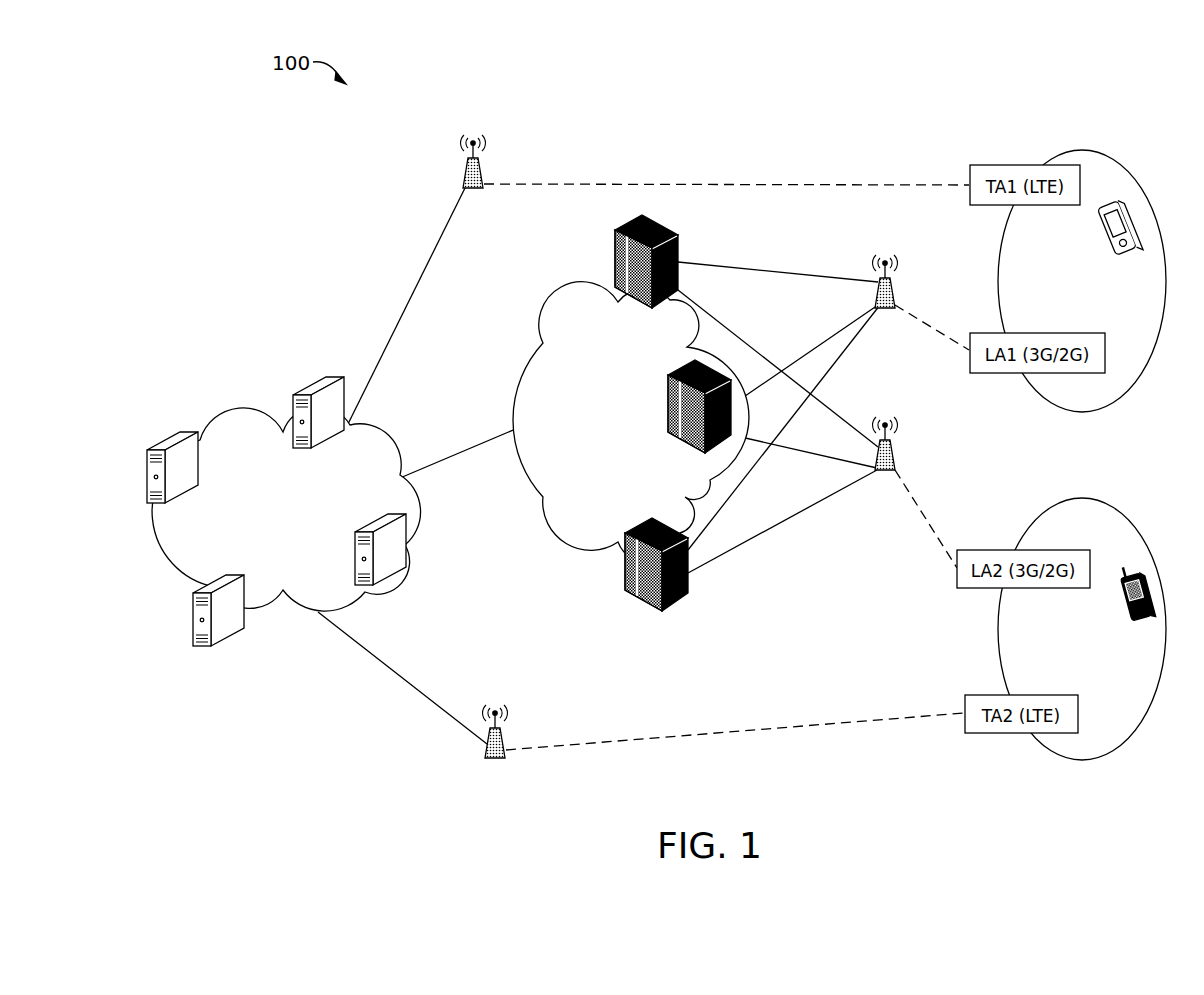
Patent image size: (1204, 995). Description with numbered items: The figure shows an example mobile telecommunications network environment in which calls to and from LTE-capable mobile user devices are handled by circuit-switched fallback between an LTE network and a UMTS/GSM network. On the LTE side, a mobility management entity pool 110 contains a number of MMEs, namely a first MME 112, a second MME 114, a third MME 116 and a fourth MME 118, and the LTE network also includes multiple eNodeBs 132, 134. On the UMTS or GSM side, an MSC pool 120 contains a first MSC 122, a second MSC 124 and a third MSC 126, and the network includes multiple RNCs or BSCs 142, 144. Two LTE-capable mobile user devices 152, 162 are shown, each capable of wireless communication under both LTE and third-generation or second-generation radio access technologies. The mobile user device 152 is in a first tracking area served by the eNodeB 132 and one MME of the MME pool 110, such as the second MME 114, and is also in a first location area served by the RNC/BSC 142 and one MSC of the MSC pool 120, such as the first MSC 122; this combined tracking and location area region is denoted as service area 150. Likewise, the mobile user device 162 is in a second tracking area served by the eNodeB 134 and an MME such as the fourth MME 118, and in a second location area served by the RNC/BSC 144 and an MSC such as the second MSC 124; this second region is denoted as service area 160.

The mobility management entity pool 110 is at (286, 508).
The first MME 112 is at (172, 453).
The second MME 114 is at (218, 623).
The third MME 116 is at (318, 398).
The fourth MME 118 is at (385, 563).
The MSC pool 120 is at (631, 422).
The first MSC 122 is at (626, 261).
The second MSC 124 is at (709, 402).
The third MSC 126 is at (656, 576).
The eNodeB 132 is at (455, 161).
The eNodeB 134 is at (494, 746).
The RNC/BSC 142 is at (906, 281).
The RNC/BSC 144 is at (906, 443).
The service area 150 is at (1082, 281).
The mobile user device 152 is at (1117, 205).
The service area 160 is at (1082, 629).
The mobile user device 162 is at (1148, 587).